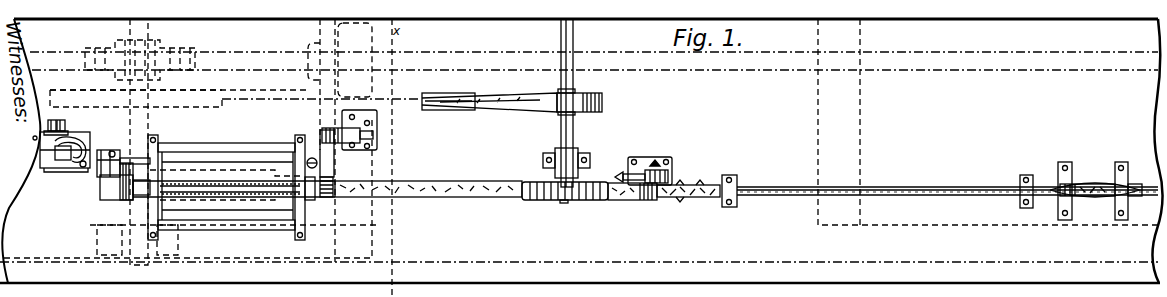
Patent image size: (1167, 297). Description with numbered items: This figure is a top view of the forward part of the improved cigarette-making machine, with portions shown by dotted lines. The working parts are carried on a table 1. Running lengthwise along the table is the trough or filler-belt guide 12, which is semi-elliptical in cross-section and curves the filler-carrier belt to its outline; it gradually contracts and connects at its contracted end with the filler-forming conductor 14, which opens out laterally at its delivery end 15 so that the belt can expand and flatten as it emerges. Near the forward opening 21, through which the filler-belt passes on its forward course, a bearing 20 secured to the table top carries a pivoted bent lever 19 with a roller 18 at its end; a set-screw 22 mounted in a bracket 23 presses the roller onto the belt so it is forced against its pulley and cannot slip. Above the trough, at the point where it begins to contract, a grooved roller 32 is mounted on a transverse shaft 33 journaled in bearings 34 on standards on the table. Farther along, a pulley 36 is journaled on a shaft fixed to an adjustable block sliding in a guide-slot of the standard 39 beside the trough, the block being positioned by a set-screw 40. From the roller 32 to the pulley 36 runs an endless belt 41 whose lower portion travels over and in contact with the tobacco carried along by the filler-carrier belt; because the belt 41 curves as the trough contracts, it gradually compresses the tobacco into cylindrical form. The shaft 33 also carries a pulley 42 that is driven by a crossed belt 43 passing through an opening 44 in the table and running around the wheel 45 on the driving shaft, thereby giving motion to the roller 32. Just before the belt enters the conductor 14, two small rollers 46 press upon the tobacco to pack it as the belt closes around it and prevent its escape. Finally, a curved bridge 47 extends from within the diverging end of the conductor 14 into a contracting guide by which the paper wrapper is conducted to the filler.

The table 1 is at (722, 268).
The trough or filler-belt guide 12 is at (448, 217).
The filler-forming conductor 14 is at (895, 191).
The delivery end 15 is at (1055, 185).
The roller 18 is at (125, 181).
The bent lever 19 is at (98, 165).
The bearing 20 is at (36, 148).
The forward opening 21 is at (135, 165).
The set-screw 22 is at (78, 166).
The bracket 23 is at (66, 140).
The roller 32 is at (575, 200).
The transverse shaft 33 is at (574, 130).
The bearings 34 is at (543, 160).
The pulley 36 is at (662, 197).
The standard 39 is at (669, 170).
The set-screw 40 is at (618, 175).
The endless belt 41 is at (641, 200).
The pulley 42 is at (549, 110).
The crossed belt 43 is at (518, 107).
The opening 44 is at (448, 95).
The wheel 45 is at (210, 96).
The small rollers 46 is at (724, 186).
The curved bridge 47 is at (1100, 200).